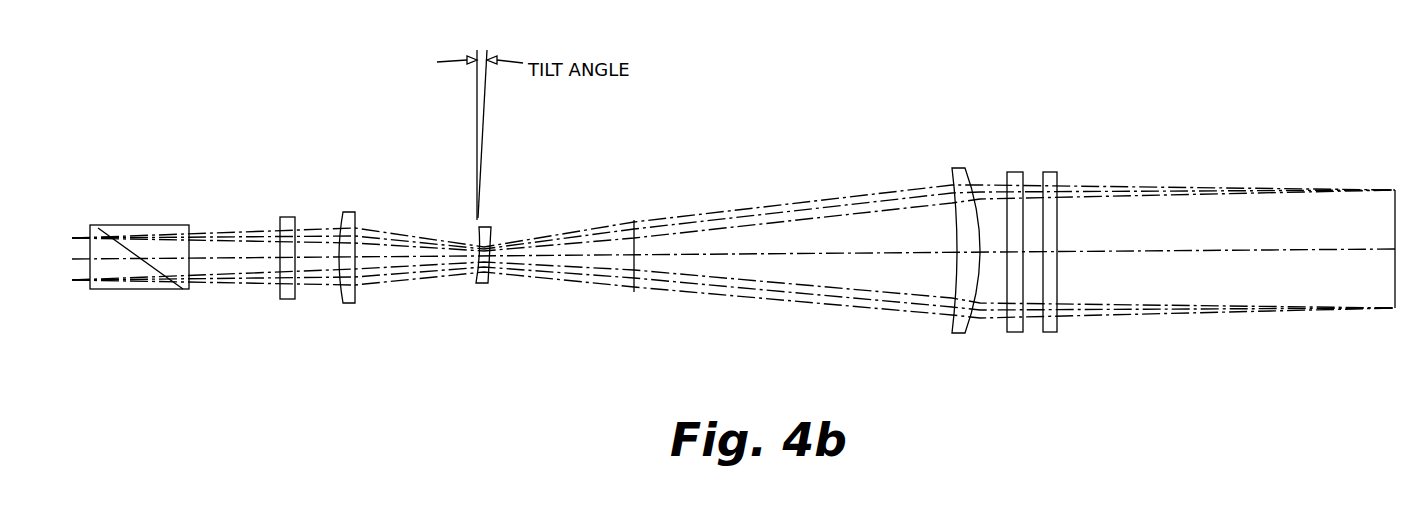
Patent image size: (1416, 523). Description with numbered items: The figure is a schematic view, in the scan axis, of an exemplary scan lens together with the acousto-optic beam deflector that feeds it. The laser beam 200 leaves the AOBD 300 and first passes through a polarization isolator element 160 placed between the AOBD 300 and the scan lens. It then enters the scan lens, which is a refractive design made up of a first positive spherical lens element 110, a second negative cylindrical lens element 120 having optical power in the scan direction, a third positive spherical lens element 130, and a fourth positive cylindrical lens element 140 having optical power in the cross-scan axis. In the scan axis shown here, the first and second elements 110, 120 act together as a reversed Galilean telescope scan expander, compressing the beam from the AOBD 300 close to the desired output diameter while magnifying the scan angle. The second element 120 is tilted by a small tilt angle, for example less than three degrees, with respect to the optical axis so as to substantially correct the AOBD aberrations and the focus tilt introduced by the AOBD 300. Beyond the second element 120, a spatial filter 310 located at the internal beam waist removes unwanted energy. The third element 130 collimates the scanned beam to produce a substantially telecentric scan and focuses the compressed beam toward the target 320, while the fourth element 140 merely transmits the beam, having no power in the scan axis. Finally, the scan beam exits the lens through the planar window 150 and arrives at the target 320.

The laser beam 200 is at (102, 240).
The AOBD 300 is at (167, 291).
The polarization isolator element 160 is at (286, 300).
The first positive spherical lens element 110 is at (349, 304).
The second negative cylindrical lens element 120 is at (479, 293).
The spatial filter 310 is at (635, 295).
The third positive spherical lens element 130 is at (956, 337).
The fourth positive cylindrical lens element 140 is at (1013, 170).
The planar window 150 is at (1052, 337).
The target 320 is at (1385, 322).